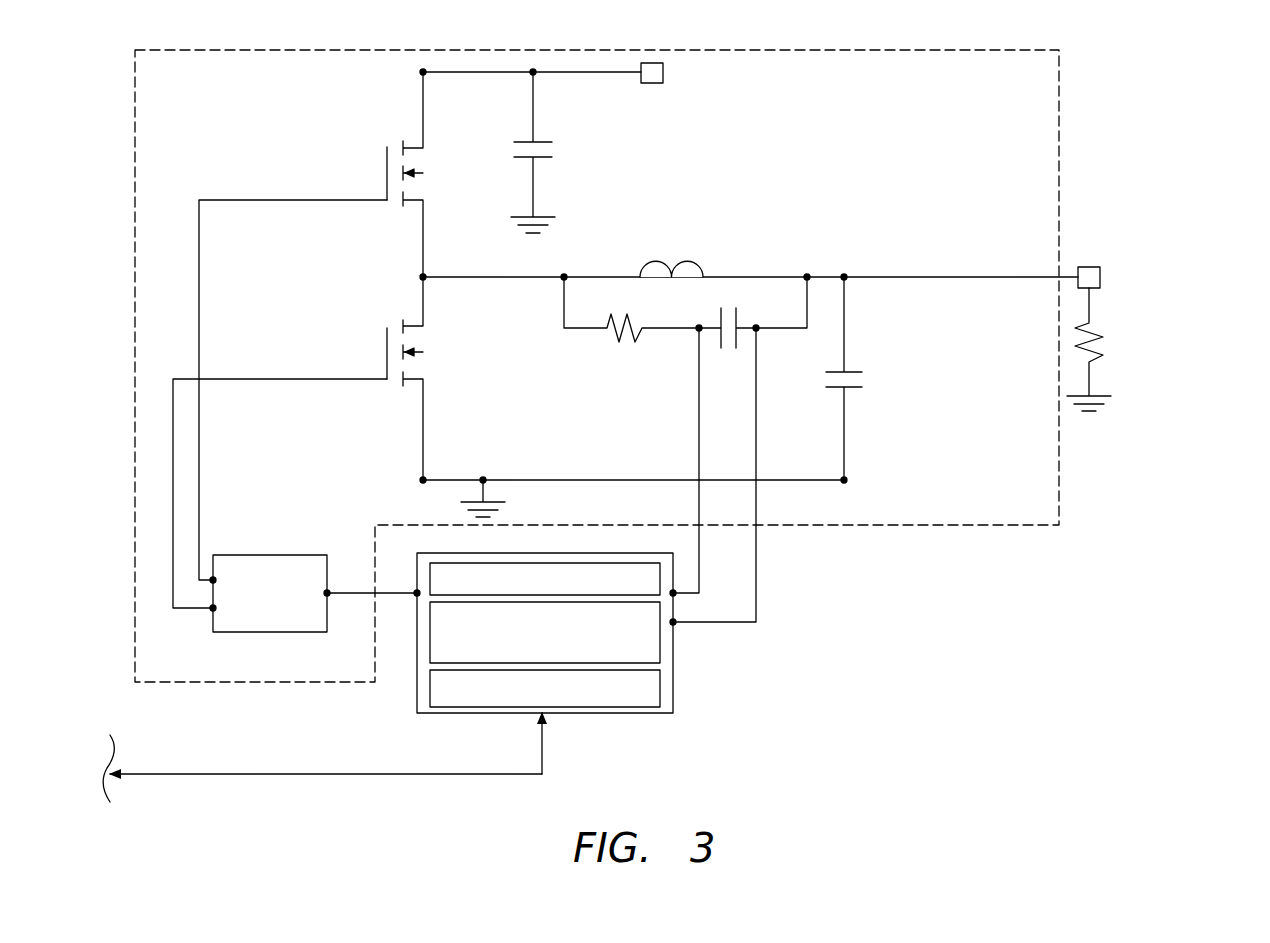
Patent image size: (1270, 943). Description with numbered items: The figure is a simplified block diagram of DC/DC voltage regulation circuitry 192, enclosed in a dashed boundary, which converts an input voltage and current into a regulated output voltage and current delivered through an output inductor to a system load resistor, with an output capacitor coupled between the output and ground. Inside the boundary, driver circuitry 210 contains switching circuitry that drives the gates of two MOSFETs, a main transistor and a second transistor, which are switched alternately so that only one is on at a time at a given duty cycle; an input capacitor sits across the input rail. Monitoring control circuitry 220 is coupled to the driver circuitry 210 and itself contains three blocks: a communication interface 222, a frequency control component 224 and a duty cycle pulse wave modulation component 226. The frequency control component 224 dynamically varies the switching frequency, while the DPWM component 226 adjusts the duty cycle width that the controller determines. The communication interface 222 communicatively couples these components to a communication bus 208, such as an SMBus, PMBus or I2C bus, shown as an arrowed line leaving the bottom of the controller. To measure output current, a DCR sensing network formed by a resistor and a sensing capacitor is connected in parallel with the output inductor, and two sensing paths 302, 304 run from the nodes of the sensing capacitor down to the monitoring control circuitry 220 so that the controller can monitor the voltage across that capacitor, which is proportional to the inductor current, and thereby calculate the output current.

The DC/DC voltage regulation circuitry 192 is at (1122, 101).
The communication bus 208 is at (170, 774).
The driver circuitry 210 is at (243, 682).
The monitoring control circuitry 220 is at (607, 713).
The communication interface 222 is at (662, 687).
The frequency control component 224 is at (662, 633).
The duty cycle pulse wave modulation (DPWM) component 226 is at (557, 563).
The sensing path 302 is at (698, 440).
The sensing path 304 is at (757, 434).